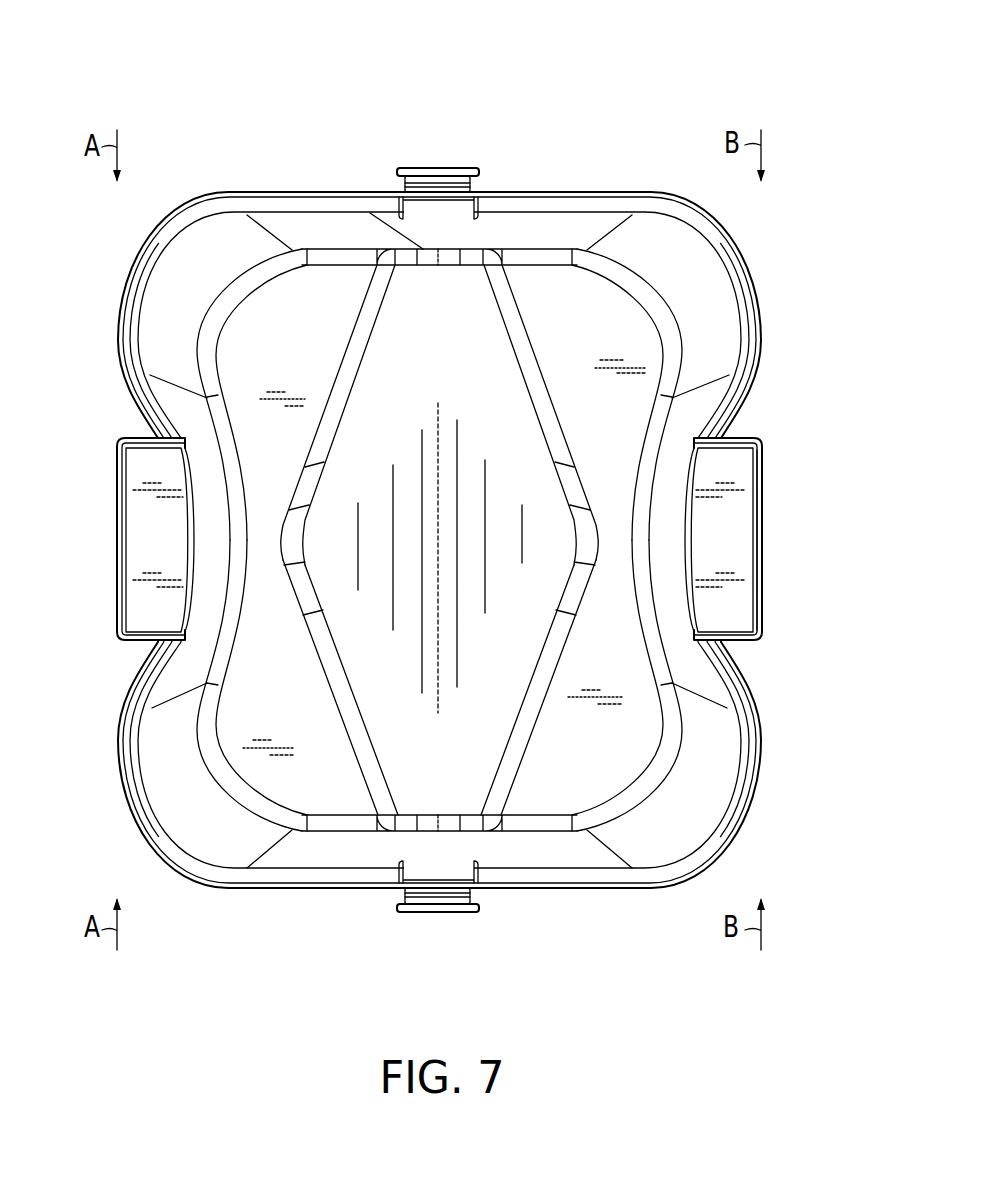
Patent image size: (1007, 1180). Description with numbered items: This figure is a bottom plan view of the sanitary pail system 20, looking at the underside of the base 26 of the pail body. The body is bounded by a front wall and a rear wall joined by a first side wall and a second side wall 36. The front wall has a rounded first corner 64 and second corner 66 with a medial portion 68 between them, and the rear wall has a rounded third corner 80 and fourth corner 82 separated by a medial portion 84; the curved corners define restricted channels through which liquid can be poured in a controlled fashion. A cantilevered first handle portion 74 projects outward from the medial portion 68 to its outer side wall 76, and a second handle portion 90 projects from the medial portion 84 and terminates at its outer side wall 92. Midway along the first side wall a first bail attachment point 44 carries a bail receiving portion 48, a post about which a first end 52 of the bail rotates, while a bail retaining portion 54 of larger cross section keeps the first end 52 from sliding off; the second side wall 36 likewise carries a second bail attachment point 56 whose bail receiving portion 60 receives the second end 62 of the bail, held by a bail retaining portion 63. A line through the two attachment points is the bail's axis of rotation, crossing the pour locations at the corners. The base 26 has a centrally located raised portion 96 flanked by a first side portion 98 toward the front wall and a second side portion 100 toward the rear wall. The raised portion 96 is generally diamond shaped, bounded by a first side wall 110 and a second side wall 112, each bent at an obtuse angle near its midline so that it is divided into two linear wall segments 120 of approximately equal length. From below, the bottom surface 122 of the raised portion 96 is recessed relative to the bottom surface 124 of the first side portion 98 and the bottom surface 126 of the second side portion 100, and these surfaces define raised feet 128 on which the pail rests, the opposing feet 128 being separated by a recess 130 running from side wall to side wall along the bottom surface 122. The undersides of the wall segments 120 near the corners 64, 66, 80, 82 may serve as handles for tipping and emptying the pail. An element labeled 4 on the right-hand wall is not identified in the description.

The sanitary pail system 20 is at (829, 104).
The container body 4 is at (733, 244).
The base 26 is at (298, 350).
The second side wall 36 is at (553, 228).
The first bail attachment point 44 is at (390, 899).
The bail receiving portion 48 is at (485, 900).
The first end of the bail 52 is at (441, 909).
The bail retaining portion 54 is at (412, 915).
The second bail attachment point 56 is at (387, 173).
The bail receiving portion 60 is at (430, 168).
The second end of the bail 62 is at (487, 182).
The bail retaining portion 63 is at (469, 168).
The first corner 64 is at (150, 752).
The second corner 66 is at (190, 276).
The medial portion 68 is at (178, 407).
The first handle portion 74 is at (140, 466).
The outer side wall 76 is at (112, 597).
The third corner 80 is at (722, 318).
The fourth corner 82 is at (715, 814).
The medial portion 84 is at (680, 660).
The second handle portion 90 is at (735, 474).
The outer side wall 92 is at (765, 556).
The raised portion 96 is at (476, 344).
The first side portion 98 is at (258, 770).
The second side portion 100 is at (623, 768).
The first side wall 110 is at (347, 682).
The second side wall 112 is at (568, 496).
The wall segments 120 is at (343, 432).
The bottom surface 122 is at (464, 372).
The bottom surface 124 is at (289, 722).
The bottom surface 126 is at (630, 672).
The raised feet 128 is at (290, 292).
The recess 130 is at (436, 276).